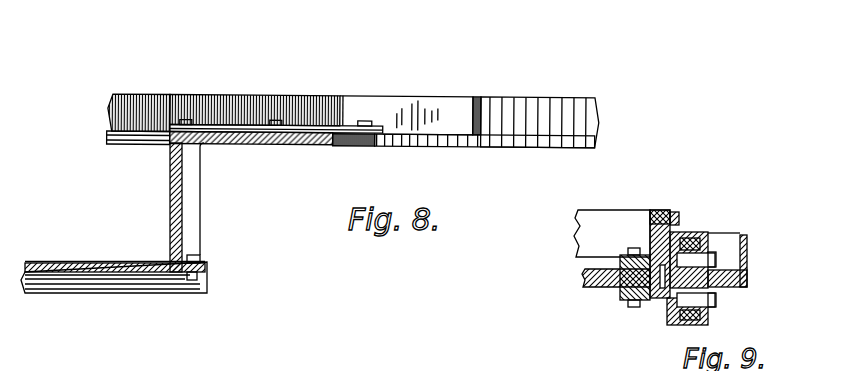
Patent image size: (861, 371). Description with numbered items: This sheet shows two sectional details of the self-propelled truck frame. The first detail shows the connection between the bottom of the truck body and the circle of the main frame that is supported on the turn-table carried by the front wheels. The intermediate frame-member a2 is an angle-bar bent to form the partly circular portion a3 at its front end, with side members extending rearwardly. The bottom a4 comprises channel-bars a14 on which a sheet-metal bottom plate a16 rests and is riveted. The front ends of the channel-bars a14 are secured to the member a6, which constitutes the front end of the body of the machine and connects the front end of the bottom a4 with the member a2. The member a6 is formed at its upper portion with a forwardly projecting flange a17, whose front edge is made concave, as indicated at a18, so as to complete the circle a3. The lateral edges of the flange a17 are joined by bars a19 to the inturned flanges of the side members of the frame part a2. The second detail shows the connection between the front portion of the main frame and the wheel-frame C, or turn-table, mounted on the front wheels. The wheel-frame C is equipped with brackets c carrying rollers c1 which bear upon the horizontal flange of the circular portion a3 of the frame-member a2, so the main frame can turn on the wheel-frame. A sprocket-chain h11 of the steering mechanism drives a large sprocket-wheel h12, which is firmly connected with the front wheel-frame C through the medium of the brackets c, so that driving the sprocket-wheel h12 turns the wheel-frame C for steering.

In FIG. 8, the intermediate frame-member a2 is at (160, 107).
In FIG. 8, the bars a19 is at (329, 116).
In FIG. 8, the partly circular portion a3 is at (500, 103).
In FIG. 9, the partly circular portion a3 is at (745, 263).
In FIG. 8, the forwardly projecting flange a17 is at (280, 145).
In FIG. 8, the concave front edge a18 is at (338, 145).
In FIG. 8, the member a6 is at (183, 192).
In FIG. 8, the bottom a4 is at (50, 265).
In FIG. 8, the sheet-metal bottom plate a16 is at (100, 265).
In FIG. 8, the channel-bars a14 is at (130, 283).
In FIG. 9, the large sprocket-wheel h12 is at (593, 218).
In FIG. 9, the sprocket-chain h11 is at (673, 215).
In FIG. 9, the wheel-frame C is at (598, 283).
In FIG. 9, the brackets c is at (632, 308).
In FIG. 9, the rollers c1 is at (700, 232).